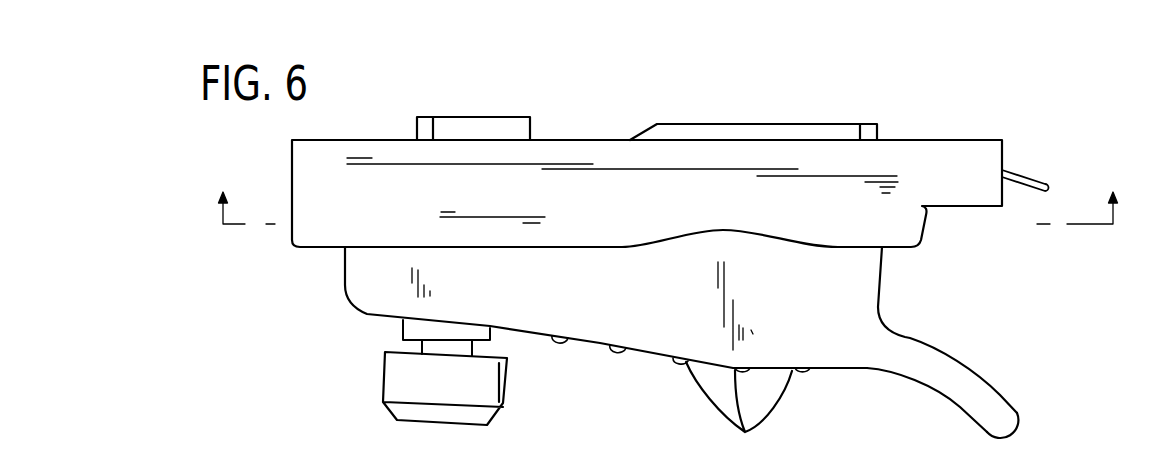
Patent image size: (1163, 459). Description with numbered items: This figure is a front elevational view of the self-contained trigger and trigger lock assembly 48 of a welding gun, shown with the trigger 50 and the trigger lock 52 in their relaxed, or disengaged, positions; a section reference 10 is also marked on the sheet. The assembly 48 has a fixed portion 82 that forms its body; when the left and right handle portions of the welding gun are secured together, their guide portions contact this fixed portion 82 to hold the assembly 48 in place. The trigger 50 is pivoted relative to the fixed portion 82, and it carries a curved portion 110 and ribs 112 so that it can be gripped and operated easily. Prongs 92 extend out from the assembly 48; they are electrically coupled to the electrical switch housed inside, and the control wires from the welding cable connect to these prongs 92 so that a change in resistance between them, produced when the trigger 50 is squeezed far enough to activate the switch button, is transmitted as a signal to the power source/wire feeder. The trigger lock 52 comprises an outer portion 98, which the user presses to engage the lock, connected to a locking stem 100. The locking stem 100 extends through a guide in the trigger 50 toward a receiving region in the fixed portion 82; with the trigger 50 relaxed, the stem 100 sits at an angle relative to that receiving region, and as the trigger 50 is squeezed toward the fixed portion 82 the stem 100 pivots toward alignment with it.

The firearm (section reference) 10 is at (669, 226).
The self-contained trigger and trigger lock assembly 48 is at (787, 96).
The trigger 50 is at (921, 336).
The trigger lock 52 is at (521, 346).
The fixed portion 82 is at (372, 147).
The prongs 92 is at (1033, 180).
The outer portion 98 is at (416, 397).
The locking stem 100 is at (422, 351).
The curved portion 110 is at (982, 400).
The ribs 112 is at (739, 410).